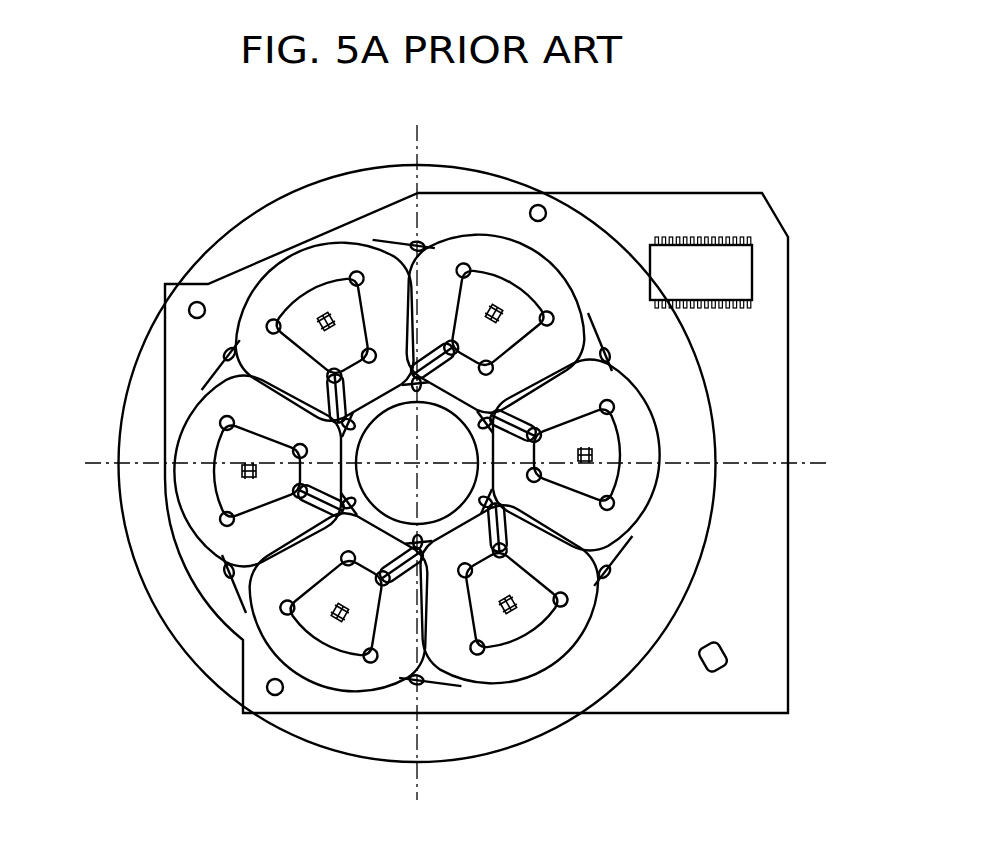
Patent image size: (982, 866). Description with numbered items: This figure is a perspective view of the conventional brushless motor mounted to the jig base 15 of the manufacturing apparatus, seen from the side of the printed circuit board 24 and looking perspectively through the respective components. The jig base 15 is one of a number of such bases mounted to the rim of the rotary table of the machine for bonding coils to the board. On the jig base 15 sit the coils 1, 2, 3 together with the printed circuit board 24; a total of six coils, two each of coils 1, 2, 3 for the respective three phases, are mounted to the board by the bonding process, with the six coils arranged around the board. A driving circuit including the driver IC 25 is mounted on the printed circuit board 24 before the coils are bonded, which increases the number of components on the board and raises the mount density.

The coil 1 is at (472, 250).
The coil 2 is at (637, 420).
The coil 3 is at (287, 282).
The jig base 15 is at (390, 735).
The printed circuit board 24 is at (610, 217).
The driver IC 25 is at (705, 268).